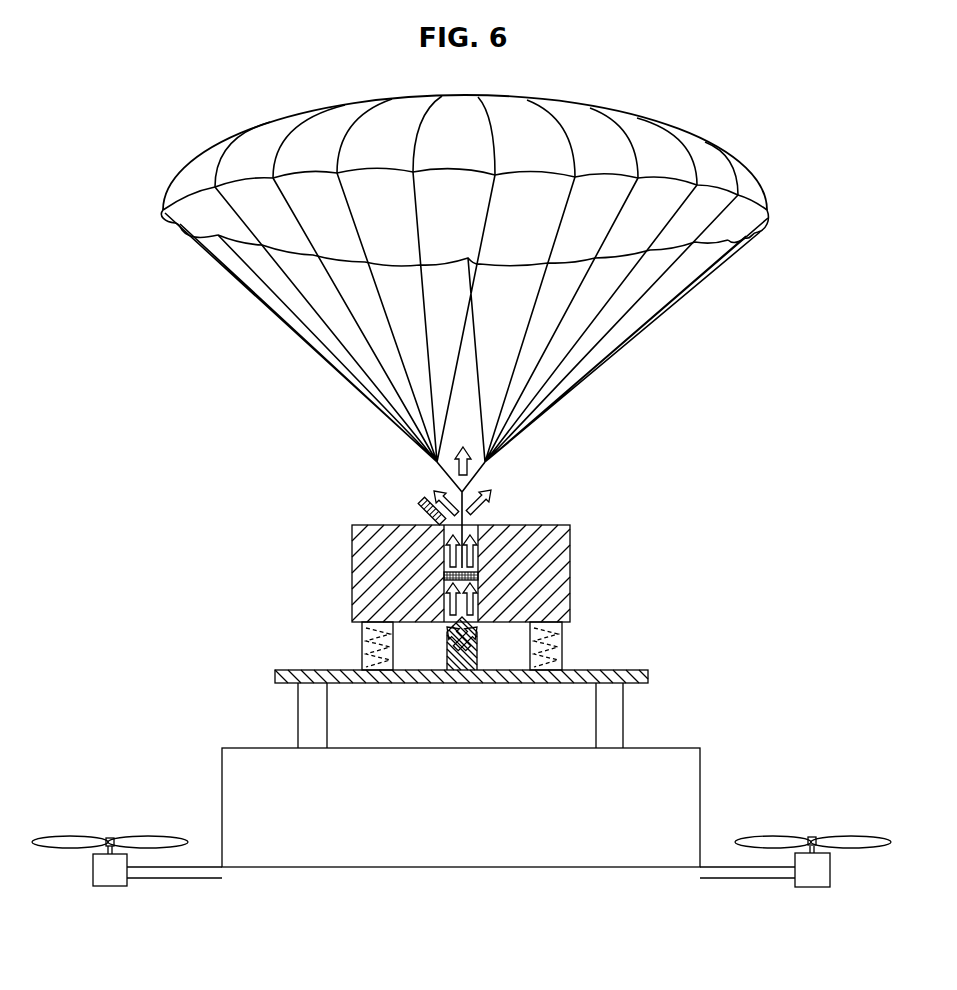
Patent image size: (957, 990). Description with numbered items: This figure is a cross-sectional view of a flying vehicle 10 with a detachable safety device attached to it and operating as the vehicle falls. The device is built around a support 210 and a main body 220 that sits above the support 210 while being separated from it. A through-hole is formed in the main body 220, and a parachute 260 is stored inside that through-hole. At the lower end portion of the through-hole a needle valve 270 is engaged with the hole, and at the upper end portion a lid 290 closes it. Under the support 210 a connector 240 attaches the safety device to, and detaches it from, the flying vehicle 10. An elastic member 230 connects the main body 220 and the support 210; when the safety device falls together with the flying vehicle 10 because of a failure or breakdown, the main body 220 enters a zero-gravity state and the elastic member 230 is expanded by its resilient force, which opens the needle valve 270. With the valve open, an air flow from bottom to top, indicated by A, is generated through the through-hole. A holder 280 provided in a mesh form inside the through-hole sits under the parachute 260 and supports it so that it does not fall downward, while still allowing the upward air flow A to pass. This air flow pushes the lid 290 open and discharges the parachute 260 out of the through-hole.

The flying vehicle 10 is at (713, 757).
The support 210 is at (648, 679).
The main body 220 is at (550, 535).
The elastic member 230 is at (365, 643).
The connector 240 is at (615, 715).
The parachute 260 is at (640, 325).
The needle valve 270 is at (463, 660).
The holder 280 is at (443, 572).
The lid 290 is at (422, 505).
The air flow A is at (478, 513).